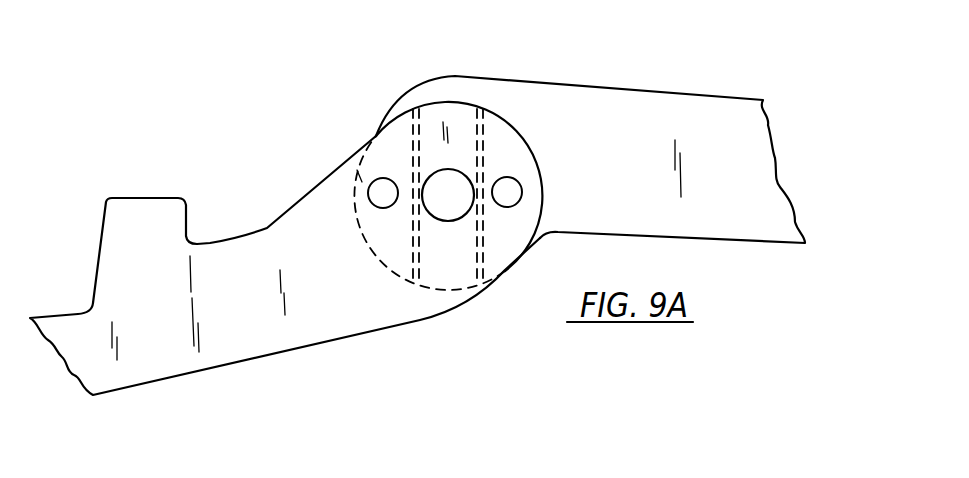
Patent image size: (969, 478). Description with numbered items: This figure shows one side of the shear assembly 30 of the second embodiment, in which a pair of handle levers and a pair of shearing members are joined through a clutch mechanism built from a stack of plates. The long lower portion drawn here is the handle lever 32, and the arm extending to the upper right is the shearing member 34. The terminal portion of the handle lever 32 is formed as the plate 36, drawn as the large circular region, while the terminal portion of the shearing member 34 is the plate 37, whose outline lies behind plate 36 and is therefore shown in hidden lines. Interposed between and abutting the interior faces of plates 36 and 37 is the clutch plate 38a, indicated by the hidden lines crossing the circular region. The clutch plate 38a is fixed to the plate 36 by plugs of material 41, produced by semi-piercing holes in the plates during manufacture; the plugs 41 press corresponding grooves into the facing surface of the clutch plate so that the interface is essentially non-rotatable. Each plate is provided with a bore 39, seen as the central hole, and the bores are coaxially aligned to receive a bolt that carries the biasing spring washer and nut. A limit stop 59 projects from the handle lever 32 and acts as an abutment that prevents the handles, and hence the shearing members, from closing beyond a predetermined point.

The shear assembly 30 is at (489, 70).
The handle lever 32 is at (278, 354).
The shearing member 34 is at (747, 246).
The plate 36 is at (544, 190).
The plate 37 is at (357, 198).
The clutch plate 38a is at (407, 280).
The bore 39 is at (460, 202).
The plug of material 41 is at (516, 184).
The limit stop 59 is at (178, 157).